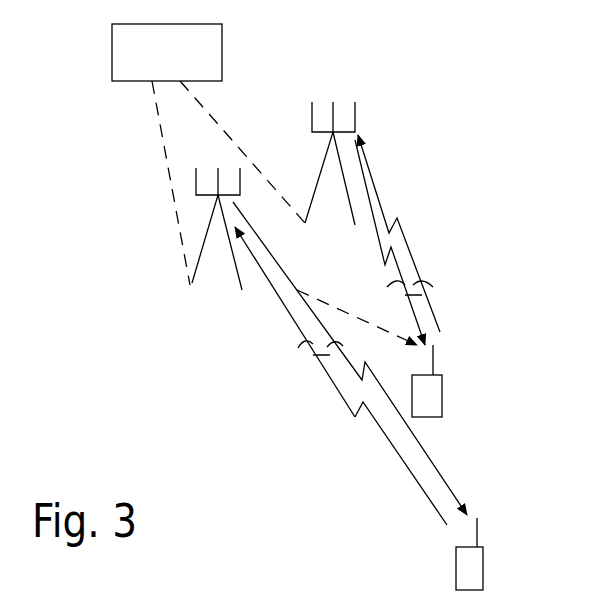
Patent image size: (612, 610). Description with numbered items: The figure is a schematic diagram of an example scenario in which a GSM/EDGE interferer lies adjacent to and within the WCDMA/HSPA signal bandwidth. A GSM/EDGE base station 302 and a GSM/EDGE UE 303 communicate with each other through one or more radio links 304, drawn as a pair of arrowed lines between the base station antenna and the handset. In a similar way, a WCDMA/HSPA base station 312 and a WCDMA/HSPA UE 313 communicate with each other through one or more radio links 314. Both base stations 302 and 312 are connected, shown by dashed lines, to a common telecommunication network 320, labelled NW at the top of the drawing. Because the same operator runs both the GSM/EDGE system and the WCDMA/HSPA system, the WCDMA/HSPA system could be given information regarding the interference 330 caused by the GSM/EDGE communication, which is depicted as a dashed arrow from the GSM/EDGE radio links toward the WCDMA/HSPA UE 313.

The telecommunication network 320 is at (167, 52).
The GSM/EDGE base station 302 is at (235, 277).
The WCDMA/HSPA base station 312 is at (317, 182).
The radio links 304 is at (302, 347).
The radio links 314 is at (433, 287).
The interference 330 is at (320, 300).
The WCDMA/HSPA UE 313 is at (442, 385).
The GSM/EDGE UE 303 is at (483, 555).